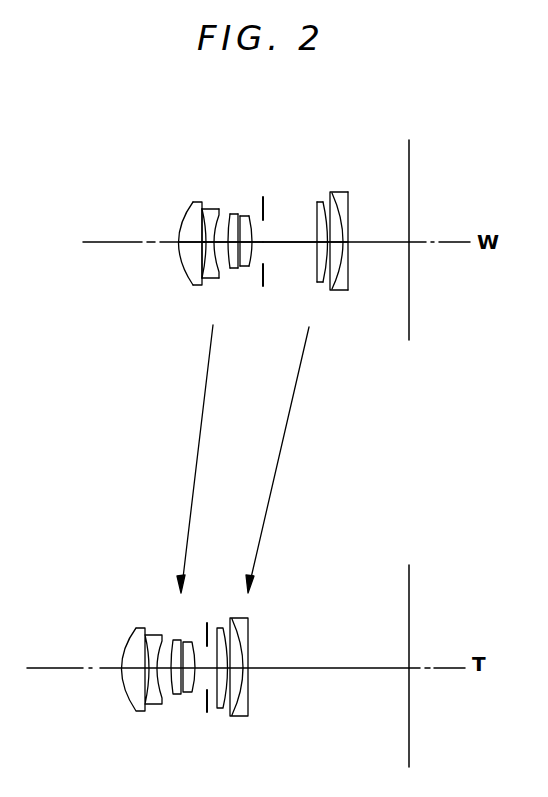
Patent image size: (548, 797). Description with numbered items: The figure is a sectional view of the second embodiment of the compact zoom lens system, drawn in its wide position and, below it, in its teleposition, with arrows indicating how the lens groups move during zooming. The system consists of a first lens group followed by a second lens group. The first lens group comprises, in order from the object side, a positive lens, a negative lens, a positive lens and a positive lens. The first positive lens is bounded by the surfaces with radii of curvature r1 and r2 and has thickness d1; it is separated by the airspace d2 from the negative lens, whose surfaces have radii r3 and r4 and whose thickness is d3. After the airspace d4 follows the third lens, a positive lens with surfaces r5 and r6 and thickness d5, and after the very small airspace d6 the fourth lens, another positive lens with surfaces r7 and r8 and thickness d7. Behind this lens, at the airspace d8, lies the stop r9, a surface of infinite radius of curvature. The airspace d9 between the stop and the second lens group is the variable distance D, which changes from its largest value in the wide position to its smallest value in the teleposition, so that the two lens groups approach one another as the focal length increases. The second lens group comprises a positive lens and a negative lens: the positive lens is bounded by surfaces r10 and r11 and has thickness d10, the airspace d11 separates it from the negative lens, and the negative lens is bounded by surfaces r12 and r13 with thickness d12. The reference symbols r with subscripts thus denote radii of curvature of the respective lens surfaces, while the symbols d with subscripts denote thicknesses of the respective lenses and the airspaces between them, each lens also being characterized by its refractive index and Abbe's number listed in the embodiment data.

The radius of curvature of first lens surface r1 is at (182, 223).
The radius of curvature of second lens surface r2 is at (196, 206).
The radius of curvature of third lens surface r3 is at (200, 206).
The radius of curvature of fourth lens surface r4 is at (216, 211).
The radius of curvature of fifth lens surface r5 is at (228, 215).
The radius of curvature of sixth lens surface r6 is at (236, 213).
The radius of curvature of seventh lens surface r7 is at (241, 215).
The radius of curvature of eighth lens surface r8 is at (251, 215).
The stop r9 is at (264, 198).
The radius of curvature of tenth lens surface r10 is at (318, 204).
The radius of curvature of eleventh lens surface r11 is at (323, 203).
The radius of curvature of twelfth lens surface r12 is at (333, 192).
The radius of curvature of thirteenth lens surface r13 is at (349, 193).
The thickness of first lens d1 is at (181, 246).
The airspace between first and second lenses d2 is at (202, 246).
The thickness of second lens d3 is at (210, 250).
The airspace between second and third lenses d4 is at (225, 252).
The thickness of third lens d5 is at (238, 252).
The airspace between third and fourth lenses d6 is at (243, 243).
The thickness of fourth lens d7 is at (255, 257).
The airspace between fourth lens and stop d8 is at (268, 256).
The variable airspace between stop and second lens group d9 is at (284, 247).
The thickness of fifth lens d10 is at (322, 256).
The airspace between fifth and sixth lenses d11 is at (339, 291).
The thickness of sixth lens d12 is at (349, 250).